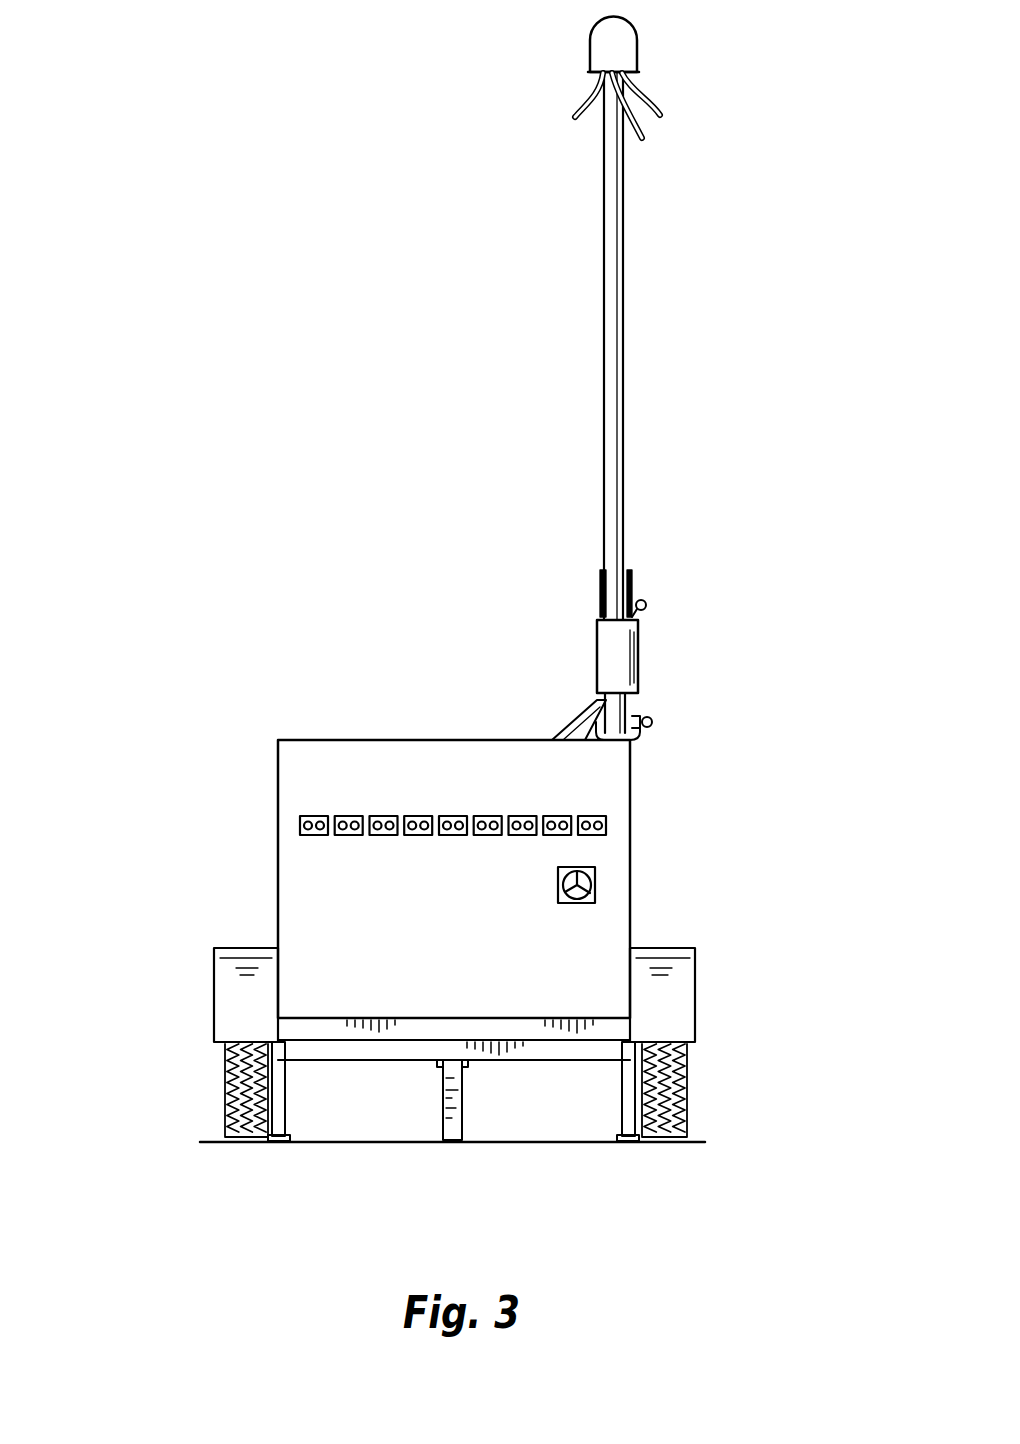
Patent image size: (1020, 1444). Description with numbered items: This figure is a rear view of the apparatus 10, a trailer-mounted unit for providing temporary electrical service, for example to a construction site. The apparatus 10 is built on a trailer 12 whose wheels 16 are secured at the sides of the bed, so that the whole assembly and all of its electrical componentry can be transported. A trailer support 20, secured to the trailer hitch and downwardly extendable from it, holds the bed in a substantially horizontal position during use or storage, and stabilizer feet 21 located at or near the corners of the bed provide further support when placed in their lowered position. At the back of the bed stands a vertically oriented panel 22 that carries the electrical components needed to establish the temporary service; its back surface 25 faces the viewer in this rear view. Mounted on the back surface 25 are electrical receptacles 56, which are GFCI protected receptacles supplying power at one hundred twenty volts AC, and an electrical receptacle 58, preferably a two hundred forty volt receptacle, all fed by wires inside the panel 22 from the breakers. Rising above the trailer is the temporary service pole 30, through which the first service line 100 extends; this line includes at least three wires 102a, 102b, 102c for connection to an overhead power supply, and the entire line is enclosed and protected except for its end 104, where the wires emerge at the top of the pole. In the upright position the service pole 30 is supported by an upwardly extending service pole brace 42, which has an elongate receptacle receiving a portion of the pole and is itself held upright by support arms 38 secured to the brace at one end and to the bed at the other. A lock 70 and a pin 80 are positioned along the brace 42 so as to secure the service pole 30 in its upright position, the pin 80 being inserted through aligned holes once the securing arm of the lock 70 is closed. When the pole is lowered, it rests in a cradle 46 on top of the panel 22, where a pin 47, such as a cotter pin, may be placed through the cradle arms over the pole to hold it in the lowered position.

The apparatus 10 is at (226, 392).
The trailer 12 is at (730, 787).
The wheels 16 is at (232, 1086).
The trailer support 20 is at (445, 1128).
The stabilizer feet 21 is at (287, 1118).
The panel 22 is at (249, 719).
The back surface 25 is at (318, 777).
The temporary service pole 30 is at (612, 388).
The support arms 38 is at (575, 735).
The service pole brace 42 is at (630, 588).
The cradle 46 is at (640, 718).
The pin 47 is at (652, 721).
The electrical receptacles 56 is at (528, 834).
The electrical receptacle 58 is at (596, 880).
The lock 70 is at (577, 657).
The pin 80 is at (646, 606).
The first service line 100 is at (506, 139).
The wire 102a is at (597, 112).
The wire 102b is at (617, 100).
The wire 102c is at (660, 152).
The end 104 is at (686, 116).